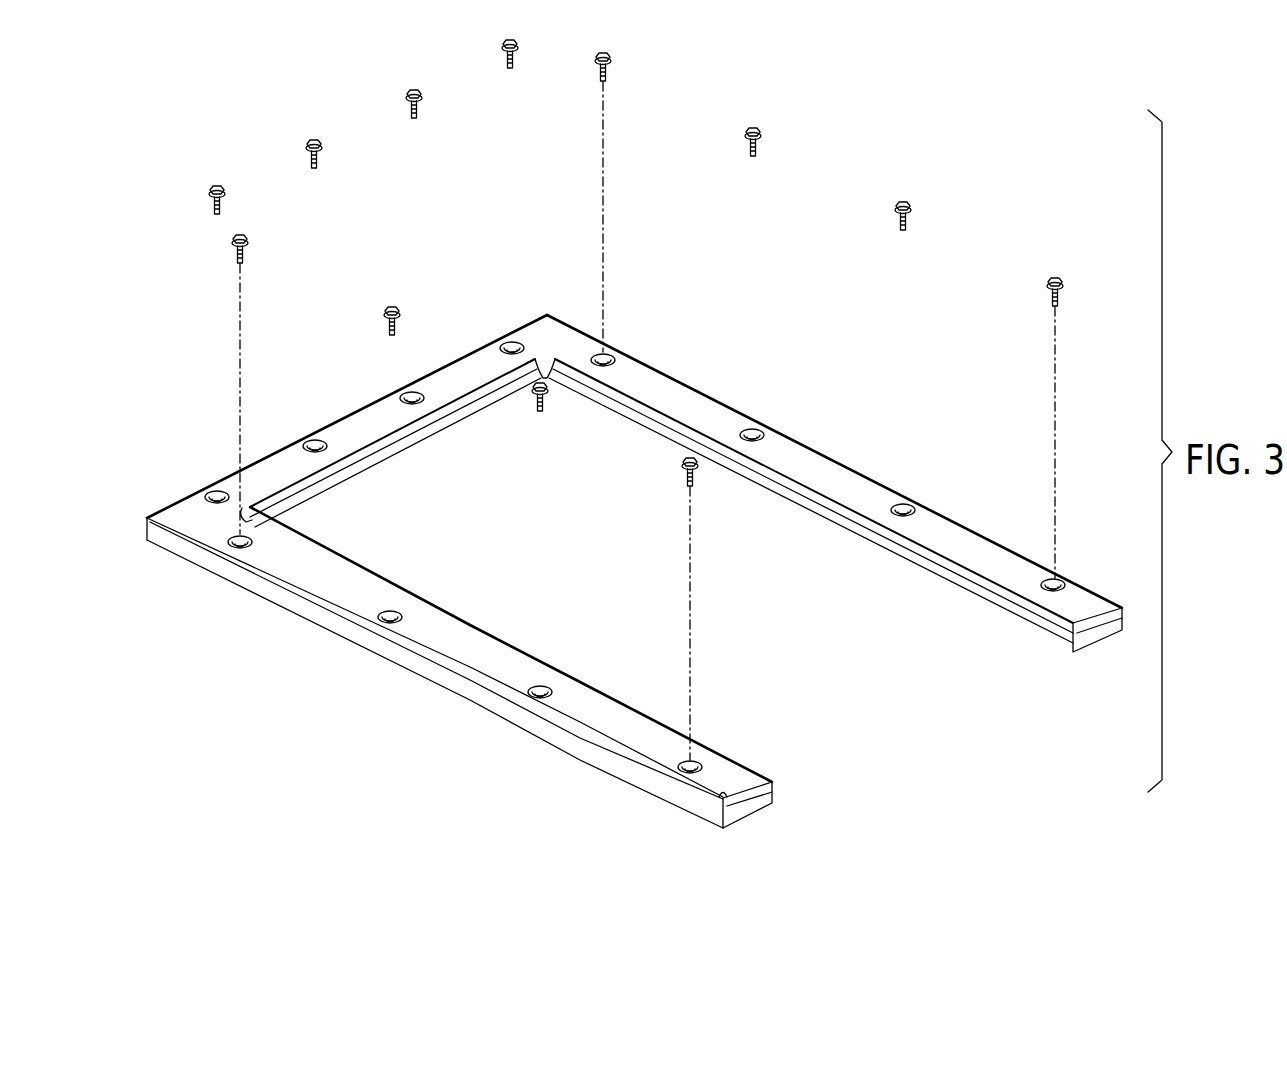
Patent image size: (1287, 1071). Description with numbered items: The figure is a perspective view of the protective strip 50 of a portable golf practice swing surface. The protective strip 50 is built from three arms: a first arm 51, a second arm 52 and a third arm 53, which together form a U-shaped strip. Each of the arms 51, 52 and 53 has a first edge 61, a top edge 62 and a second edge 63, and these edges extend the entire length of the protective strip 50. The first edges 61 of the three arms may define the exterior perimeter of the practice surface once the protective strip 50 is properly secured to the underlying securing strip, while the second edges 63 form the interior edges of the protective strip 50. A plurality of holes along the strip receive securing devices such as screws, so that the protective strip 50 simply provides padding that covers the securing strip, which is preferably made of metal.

The protective strip 50 is at (635, 576).
The first arm 51 is at (937, 528).
The second arm 52 is at (368, 427).
The third arm 53 is at (733, 780).
The first edge 61 is at (459, 672).
The top edge 62 is at (288, 465).
The second edge 63 is at (383, 455).